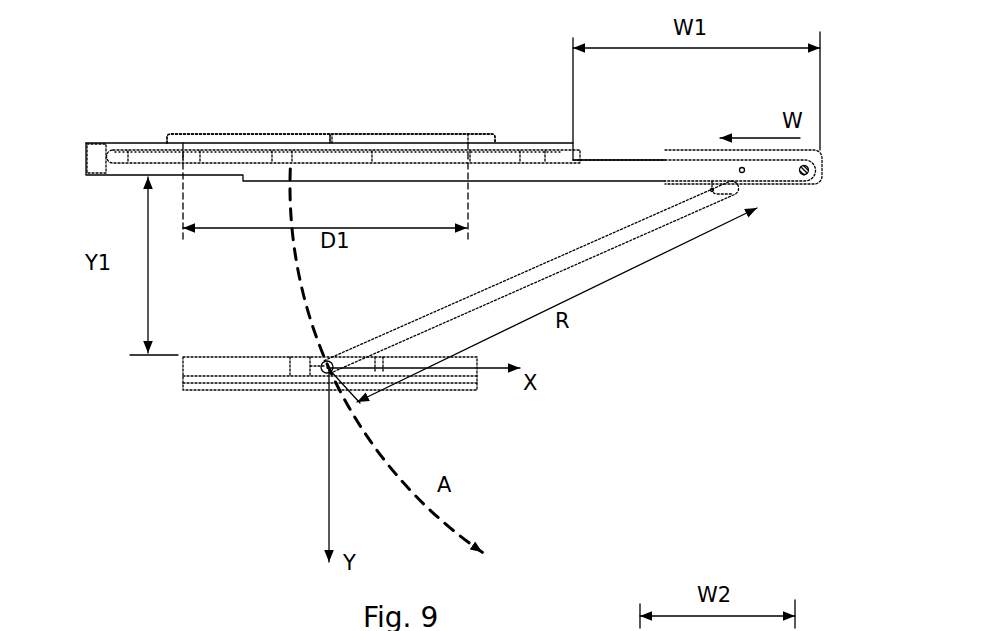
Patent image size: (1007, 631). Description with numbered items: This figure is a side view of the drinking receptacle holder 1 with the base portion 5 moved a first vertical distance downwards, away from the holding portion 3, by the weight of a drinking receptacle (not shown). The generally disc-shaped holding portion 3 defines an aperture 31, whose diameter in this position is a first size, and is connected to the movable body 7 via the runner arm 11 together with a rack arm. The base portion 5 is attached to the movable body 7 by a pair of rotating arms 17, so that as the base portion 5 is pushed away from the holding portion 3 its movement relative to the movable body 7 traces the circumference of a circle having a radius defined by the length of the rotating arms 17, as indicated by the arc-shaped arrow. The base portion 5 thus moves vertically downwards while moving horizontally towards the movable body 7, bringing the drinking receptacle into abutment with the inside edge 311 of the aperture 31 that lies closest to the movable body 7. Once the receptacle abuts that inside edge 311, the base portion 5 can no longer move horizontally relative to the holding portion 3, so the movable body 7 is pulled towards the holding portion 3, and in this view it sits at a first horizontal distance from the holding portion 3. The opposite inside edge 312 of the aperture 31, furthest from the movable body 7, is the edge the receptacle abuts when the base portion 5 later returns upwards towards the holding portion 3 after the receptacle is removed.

The drinking receptacle holder 1 is at (100, 103).
The receptacle holding portion 3 is at (490, 136).
The aperture 31 is at (320, 137).
The inside edge 311 is at (468, 135).
The inside edge 312 is at (180, 130).
The runner arm 11 is at (592, 172).
The rotating arms 17 is at (652, 222).
The movable body 7 is at (810, 178).
The base portion 5 is at (183, 373).